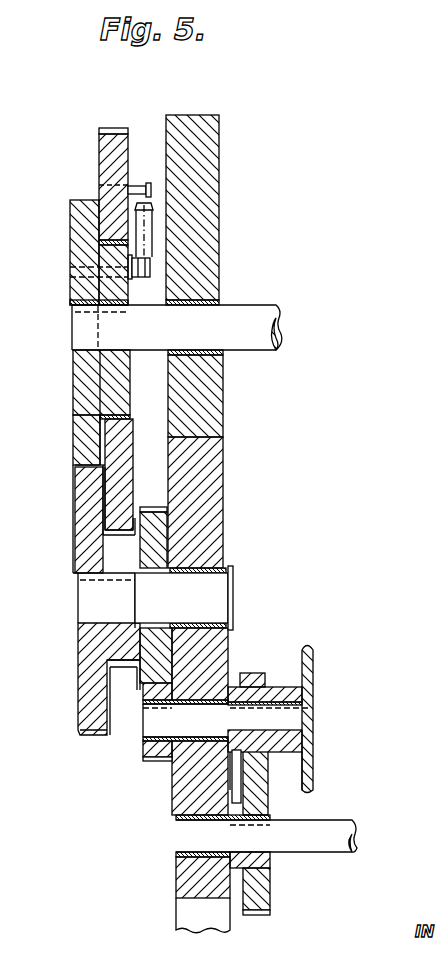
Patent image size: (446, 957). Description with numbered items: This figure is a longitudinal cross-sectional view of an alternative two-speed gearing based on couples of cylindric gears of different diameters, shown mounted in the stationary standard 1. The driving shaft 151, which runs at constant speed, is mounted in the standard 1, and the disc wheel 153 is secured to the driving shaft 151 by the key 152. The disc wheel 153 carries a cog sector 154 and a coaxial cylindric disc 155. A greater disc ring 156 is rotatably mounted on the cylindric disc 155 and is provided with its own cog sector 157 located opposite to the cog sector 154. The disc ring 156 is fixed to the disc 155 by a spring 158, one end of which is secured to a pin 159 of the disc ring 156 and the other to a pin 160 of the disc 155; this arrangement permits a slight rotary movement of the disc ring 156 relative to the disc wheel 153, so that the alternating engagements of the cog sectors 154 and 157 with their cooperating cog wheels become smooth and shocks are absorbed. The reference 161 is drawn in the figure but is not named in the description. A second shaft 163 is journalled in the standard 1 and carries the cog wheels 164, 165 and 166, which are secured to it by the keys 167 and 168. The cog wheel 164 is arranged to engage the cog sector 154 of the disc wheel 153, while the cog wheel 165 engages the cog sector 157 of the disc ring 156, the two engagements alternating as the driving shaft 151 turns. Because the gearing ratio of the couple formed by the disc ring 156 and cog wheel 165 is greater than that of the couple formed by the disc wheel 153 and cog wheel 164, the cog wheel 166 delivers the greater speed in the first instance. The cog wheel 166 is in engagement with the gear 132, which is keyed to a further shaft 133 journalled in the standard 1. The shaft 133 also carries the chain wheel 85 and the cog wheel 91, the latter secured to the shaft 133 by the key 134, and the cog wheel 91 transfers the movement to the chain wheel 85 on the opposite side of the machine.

The standard 1 is at (212, 195).
The chain wheel 85 is at (313, 690).
The cog wheel 91 is at (258, 685).
The gear 132 is at (143, 753).
The shaft 133 is at (150, 728).
The key 134 is at (312, 708).
The driving shaft 151 is at (258, 298).
The key 152 is at (72, 318).
The disc wheel 153 is at (75, 290).
The cog sector 154 is at (78, 467).
The cylindric disc 155 is at (110, 372).
The disc ring 156 is at (100, 155).
The cog sector 157 is at (118, 128).
The spring 158 is at (150, 232).
The pin 159 is at (138, 186).
The pin 160 is at (152, 268).
The key 161 is at (95, 273).
The shaft 163 is at (215, 582).
The cog wheel 164 is at (85, 508).
The cog wheel 165 is at (125, 548).
The cog wheel 166 is at (135, 582).
The key 167 is at (80, 588).
The key 168 is at (184, 598).